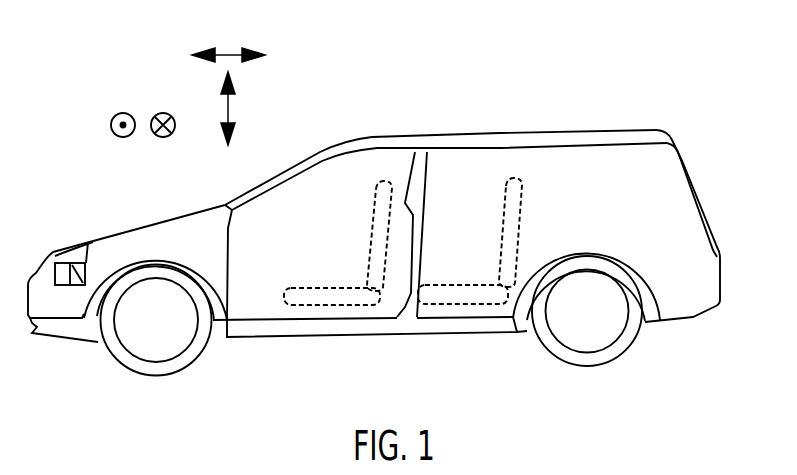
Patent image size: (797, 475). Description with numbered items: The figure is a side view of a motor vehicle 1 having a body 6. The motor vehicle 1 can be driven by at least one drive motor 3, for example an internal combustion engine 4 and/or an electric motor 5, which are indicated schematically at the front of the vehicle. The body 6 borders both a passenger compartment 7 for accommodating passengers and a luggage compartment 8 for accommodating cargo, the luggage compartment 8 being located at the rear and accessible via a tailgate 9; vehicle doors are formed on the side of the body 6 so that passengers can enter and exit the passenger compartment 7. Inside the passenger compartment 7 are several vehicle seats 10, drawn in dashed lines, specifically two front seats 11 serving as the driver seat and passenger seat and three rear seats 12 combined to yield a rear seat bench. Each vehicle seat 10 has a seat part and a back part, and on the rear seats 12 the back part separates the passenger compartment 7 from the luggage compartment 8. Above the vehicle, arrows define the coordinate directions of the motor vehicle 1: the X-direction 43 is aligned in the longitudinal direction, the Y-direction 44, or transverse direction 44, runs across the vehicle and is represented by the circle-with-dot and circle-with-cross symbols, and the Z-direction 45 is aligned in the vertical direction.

The motor vehicle 1 is at (693, 365).
The drive motor 3 is at (70, 274).
The internal combustion engine 4 is at (58, 267).
The electric motor 5 is at (80, 272).
The body 6 is at (180, 218).
The passenger compartment 7 is at (343, 180).
The luggage compartment 8 is at (682, 202).
The tailgate 9 is at (697, 162).
The vehicle seats 10 is at (396, 295).
The front seats 11 is at (320, 283).
The rear seats 12 is at (462, 285).
The X-direction 43 is at (227, 55).
The Y-direction 44 is at (157, 112).
The Z-direction 45 is at (228, 110).